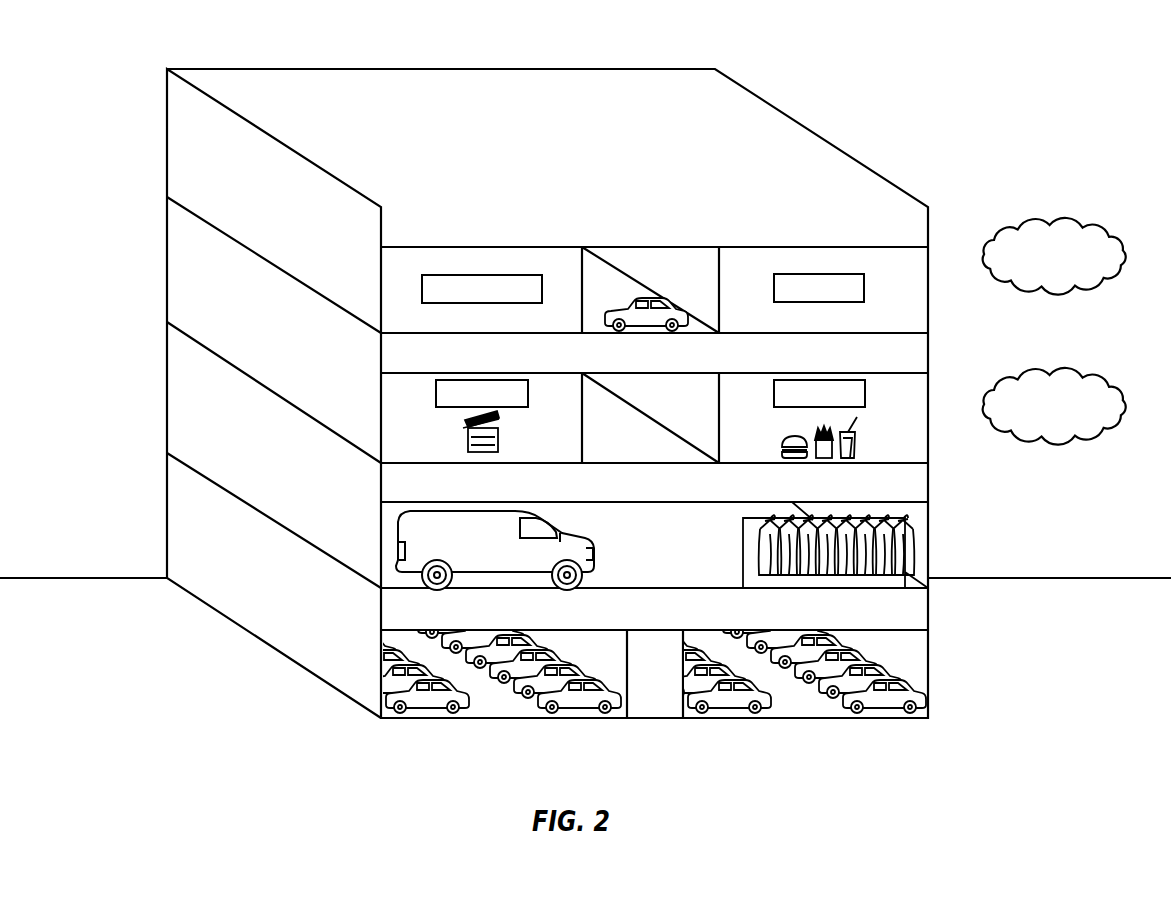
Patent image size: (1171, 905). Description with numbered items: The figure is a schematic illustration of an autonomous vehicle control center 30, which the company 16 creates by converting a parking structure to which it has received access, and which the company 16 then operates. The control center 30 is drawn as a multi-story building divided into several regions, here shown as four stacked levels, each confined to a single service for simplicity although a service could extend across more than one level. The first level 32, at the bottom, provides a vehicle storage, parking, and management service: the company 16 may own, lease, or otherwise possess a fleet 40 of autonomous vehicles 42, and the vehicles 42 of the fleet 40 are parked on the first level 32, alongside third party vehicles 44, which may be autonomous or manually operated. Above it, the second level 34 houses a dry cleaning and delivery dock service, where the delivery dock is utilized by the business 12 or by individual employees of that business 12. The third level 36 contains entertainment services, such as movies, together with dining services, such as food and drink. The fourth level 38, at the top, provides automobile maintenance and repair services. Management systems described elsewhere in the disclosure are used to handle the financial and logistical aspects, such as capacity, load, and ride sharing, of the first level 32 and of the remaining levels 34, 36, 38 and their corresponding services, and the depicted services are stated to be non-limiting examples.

The autonomous vehicle control center 30 is at (876, 68).
The fourth level 38 is at (175, 120).
The third level 36 is at (175, 256).
The second level 34 is at (175, 385).
The first level 32 is at (175, 518).
The fleet 40 is at (382, 725).
The autonomous vehicles 42 is at (385, 696).
The third party vehicles 44 is at (725, 700).
The company 16 is at (1066, 217).
The business 12 is at (1066, 367).